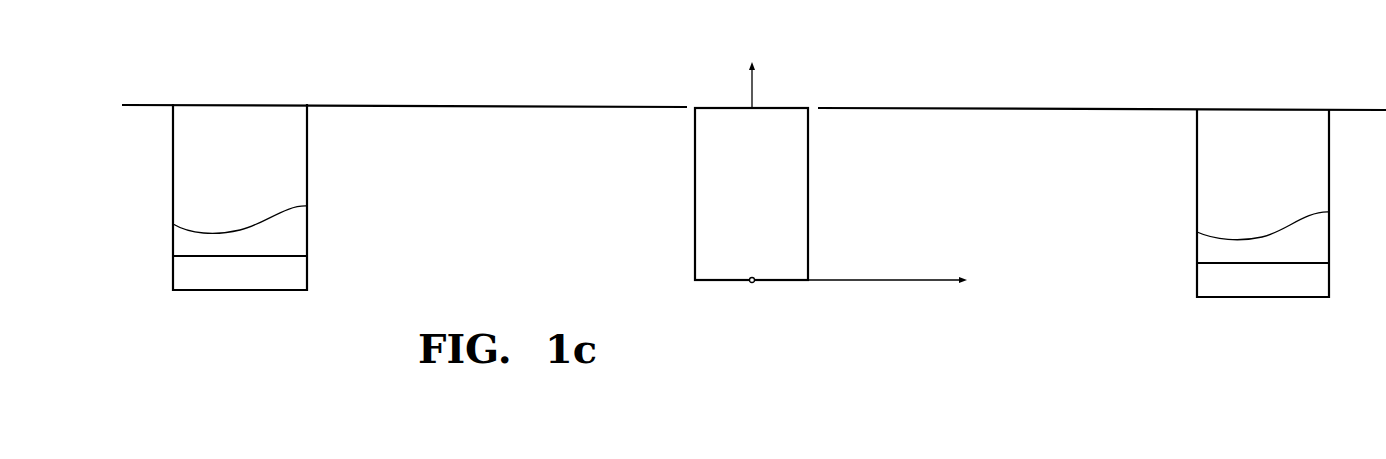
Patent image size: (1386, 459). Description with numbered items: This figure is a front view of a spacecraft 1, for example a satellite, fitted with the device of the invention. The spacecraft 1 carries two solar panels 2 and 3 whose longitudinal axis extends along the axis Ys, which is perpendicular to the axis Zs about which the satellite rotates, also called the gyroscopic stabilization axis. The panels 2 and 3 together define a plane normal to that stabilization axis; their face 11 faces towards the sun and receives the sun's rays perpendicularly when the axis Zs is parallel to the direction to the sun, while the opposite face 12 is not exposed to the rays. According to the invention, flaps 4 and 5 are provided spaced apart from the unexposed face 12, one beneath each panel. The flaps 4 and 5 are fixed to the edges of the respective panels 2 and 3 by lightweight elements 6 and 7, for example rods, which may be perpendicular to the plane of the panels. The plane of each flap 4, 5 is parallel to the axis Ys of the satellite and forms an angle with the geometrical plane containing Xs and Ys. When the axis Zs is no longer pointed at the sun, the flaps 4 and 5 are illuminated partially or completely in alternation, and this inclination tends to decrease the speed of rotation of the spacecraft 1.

The spacecraft 1 is at (672, 250).
The solar panel 2 is at (403, 96).
The solar panel 3 is at (884, 98).
The flap 4 is at (322, 279).
The flap 5 is at (1203, 318).
The lightweight element 6 is at (307, 207).
The lightweight element 7 is at (1329, 213).
The face 11 is at (529, 106).
The face 12 is at (610, 106).